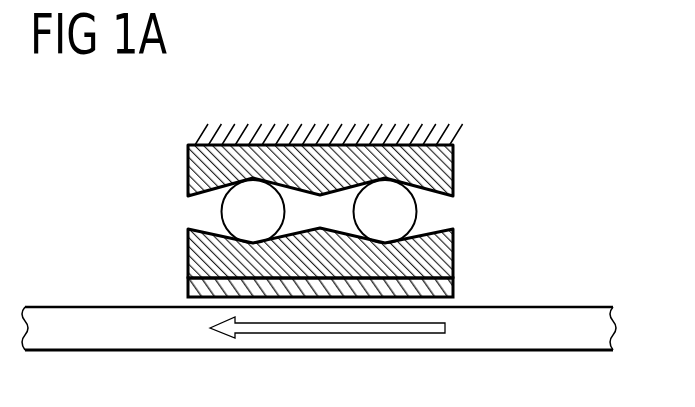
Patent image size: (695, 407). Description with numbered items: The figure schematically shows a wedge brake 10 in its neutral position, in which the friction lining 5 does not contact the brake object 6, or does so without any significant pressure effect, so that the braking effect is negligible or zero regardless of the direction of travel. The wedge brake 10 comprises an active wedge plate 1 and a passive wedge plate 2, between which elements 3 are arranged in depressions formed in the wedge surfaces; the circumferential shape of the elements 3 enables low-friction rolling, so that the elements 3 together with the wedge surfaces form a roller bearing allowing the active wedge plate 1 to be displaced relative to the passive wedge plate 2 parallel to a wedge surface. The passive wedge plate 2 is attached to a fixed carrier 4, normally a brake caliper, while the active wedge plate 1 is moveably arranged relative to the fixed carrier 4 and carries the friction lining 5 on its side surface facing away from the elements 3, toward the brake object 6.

The wedge brake 10 is at (525, 66).
The active wedge plate 1 is at (196, 252).
The passive wedge plate 2 is at (198, 173).
The elements 3 is at (222, 215).
The fixed carrier 4 is at (202, 138).
The friction lining 5 is at (196, 289).
The brake object 6 is at (599, 327).